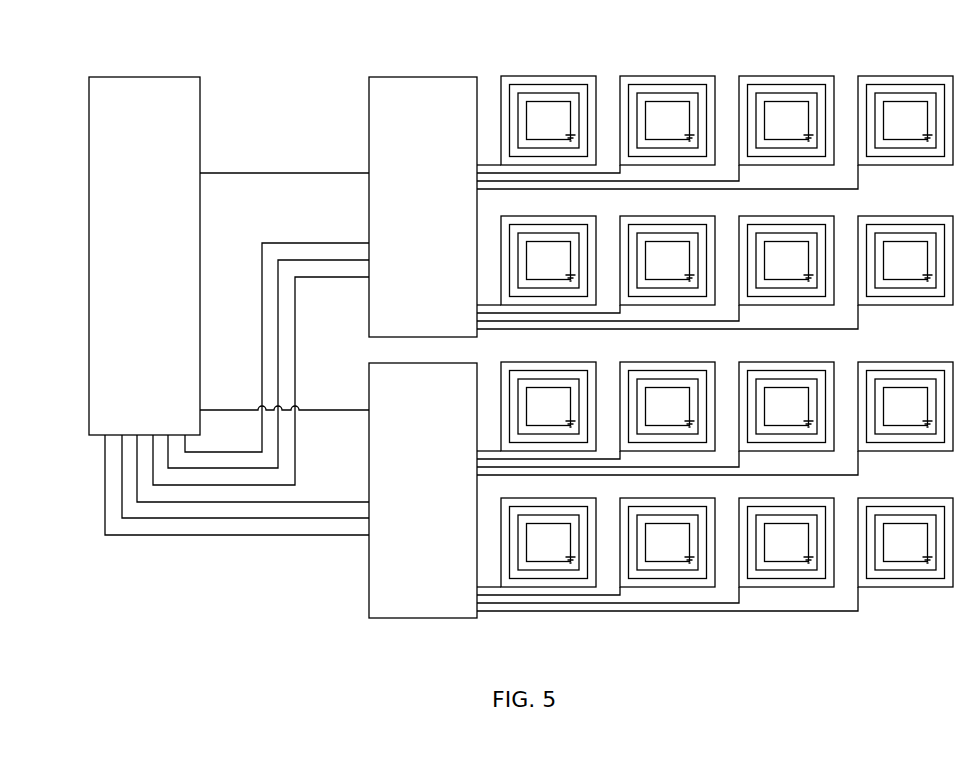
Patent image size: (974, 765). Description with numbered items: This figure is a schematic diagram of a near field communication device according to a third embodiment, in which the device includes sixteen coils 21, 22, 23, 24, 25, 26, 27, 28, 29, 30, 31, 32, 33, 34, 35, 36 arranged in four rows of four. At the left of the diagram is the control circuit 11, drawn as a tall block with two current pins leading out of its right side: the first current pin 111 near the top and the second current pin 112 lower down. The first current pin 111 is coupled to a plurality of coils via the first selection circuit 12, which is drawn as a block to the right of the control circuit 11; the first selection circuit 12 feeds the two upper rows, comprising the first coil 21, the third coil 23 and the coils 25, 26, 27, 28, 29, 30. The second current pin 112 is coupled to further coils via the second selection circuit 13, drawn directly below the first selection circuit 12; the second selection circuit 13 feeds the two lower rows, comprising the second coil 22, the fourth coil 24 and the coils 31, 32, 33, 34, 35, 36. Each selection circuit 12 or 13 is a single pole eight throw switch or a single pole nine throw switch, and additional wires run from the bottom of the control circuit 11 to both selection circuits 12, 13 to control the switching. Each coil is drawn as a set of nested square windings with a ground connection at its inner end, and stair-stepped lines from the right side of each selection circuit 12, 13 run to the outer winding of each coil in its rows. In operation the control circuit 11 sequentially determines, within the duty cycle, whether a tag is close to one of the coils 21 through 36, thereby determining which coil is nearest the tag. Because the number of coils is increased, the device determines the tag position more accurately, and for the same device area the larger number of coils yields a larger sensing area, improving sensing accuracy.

The control circuit 11 is at (147, 75).
The first selection circuit 12 is at (425, 76).
The second selection circuit 13 is at (420, 620).
The first current pin 111 is at (218, 172).
The second current pin 112 is at (217, 410).
The first coil 21 is at (548, 120).
The second coil 22 is at (548, 406).
The third coil 23 is at (548, 260).
The fourth coil 24 is at (548, 542).
The coil 25 is at (667, 120).
The coil 26 is at (667, 260).
The coil 27 is at (786, 120).
The coil 28 is at (786, 260).
The coil 29 is at (905, 120).
The coil 30 is at (905, 260).
The coil 31 is at (667, 406).
The coil 32 is at (667, 542).
The coil 33 is at (786, 406).
The coil 34 is at (786, 542).
The coil 35 is at (905, 406).
The coil 36 is at (905, 542).